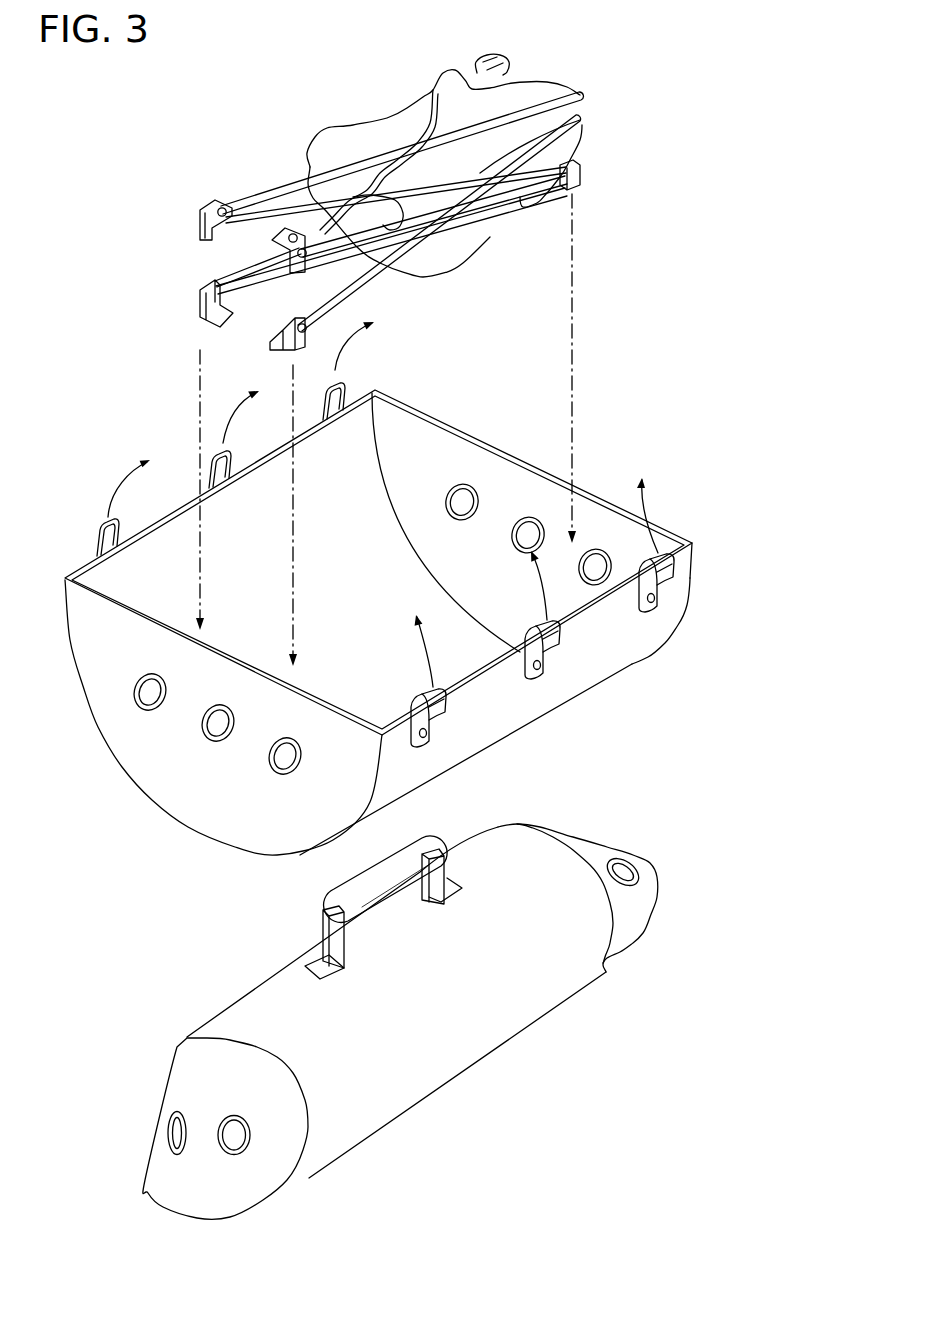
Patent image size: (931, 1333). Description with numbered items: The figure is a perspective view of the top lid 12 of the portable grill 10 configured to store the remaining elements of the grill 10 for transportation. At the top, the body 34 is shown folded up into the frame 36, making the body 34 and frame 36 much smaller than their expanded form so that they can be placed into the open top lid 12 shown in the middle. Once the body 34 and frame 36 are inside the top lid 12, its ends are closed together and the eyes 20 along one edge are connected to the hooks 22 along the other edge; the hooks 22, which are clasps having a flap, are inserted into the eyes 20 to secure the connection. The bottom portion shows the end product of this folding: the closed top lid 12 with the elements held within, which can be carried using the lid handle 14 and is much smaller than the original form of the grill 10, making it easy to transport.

The grill 10 is at (242, 132).
The top lid 12 is at (517, 487).
The lid handle 14 is at (323, 914).
The eyes 20 is at (97, 535).
The hooks 22 is at (657, 598).
The body 34 is at (547, 78).
The frame 36 is at (228, 268).